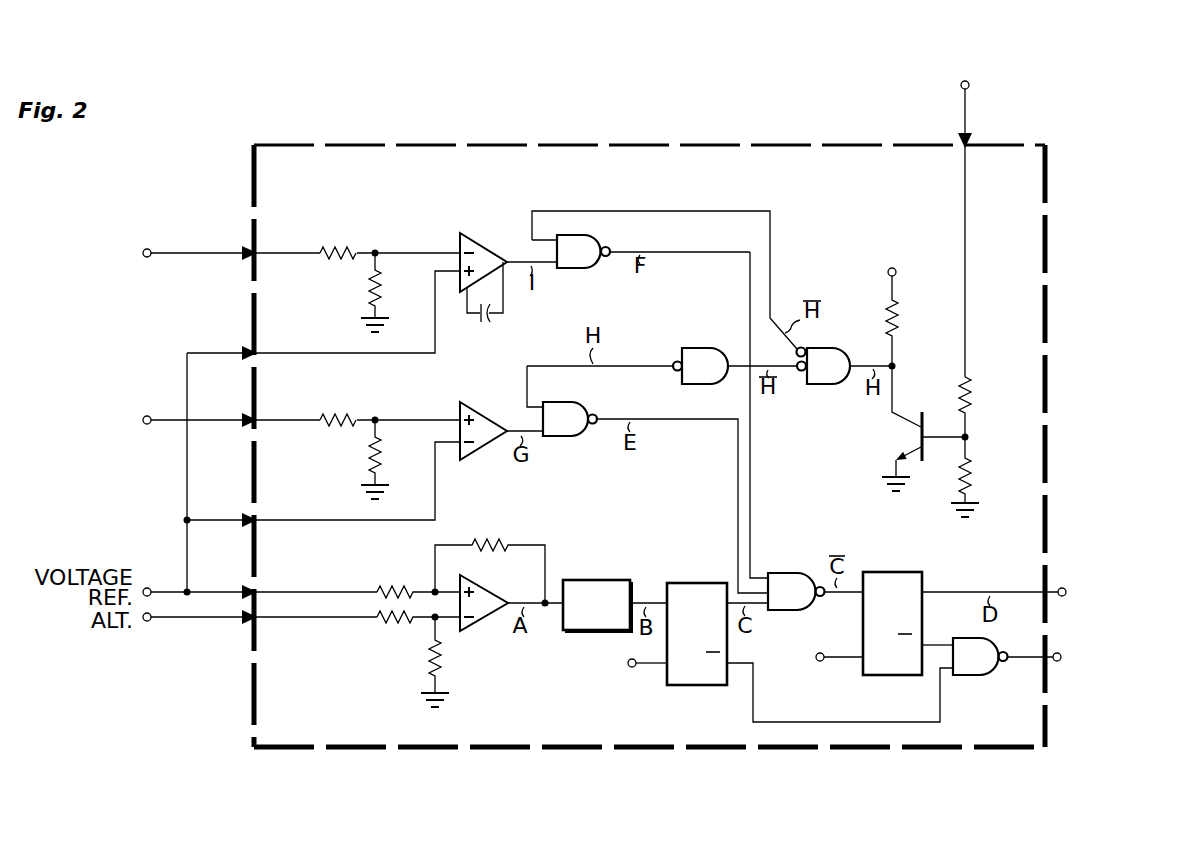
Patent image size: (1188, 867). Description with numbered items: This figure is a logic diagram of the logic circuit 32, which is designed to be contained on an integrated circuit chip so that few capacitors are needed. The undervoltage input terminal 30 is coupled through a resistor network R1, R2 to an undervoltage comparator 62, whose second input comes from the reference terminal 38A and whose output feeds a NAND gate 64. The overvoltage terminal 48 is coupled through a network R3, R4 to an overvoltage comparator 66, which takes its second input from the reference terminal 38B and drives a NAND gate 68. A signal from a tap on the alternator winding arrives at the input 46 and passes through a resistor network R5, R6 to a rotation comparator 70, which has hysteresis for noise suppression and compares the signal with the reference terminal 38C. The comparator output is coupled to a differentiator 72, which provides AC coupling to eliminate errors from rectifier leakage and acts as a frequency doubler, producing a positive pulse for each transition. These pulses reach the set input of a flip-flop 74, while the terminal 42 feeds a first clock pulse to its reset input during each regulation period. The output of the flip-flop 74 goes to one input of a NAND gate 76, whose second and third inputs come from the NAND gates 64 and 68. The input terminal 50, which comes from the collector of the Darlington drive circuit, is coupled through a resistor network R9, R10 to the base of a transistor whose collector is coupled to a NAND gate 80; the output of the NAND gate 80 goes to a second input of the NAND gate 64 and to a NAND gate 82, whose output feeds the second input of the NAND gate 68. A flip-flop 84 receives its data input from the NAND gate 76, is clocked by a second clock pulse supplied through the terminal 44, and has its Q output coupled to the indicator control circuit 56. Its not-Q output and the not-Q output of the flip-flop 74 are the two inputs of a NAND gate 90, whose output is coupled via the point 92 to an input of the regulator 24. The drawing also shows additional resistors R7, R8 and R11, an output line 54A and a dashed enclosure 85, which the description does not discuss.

The undervoltage input terminal 30 is at (249, 251).
The reference terminal 38A is at (246, 353).
The reference terminal 38B is at (246, 516).
The reference terminal 38C is at (248, 592).
The input 46 is at (242, 622).
The overvoltage terminal 48 is at (240, 419).
The logic circuit input terminal 50 is at (972, 139).
The undervoltage comparator 62 is at (468, 235).
The NAND gate 64 is at (572, 271).
The overvoltage comparator 66 is at (470, 455).
The NAND gate 68 is at (560, 437).
The rotation comparator 70 is at (464, 623).
The differentiator 72 is at (599, 580).
The flip-flop 74 is at (697, 687).
The NAND gate 76 is at (790, 573).
The NAND gate 80 is at (823, 384).
The NAND gate 82 is at (703, 347).
The flip-flop 84 is at (893, 677).
The control circuit enclosure 85 is at (578, 145).
The NAND gate 90 is at (978, 677).
The point 92 is at (1014, 657).
The terminal 42 is at (632, 668).
The terminal 44 is at (820, 661).
The output line to lamp circuit 54A is at (925, 588).
The logic circuit 32 is at (307, 718).
The indicator control circuit 56 is at (1117, 589).
The regulator 24 is at (1096, 673).
The resistor R1 is at (342, 251).
The resistor R2 is at (368, 292).
The resistor R3 is at (338, 414).
The resistor R4 is at (370, 455).
The resistor R5 is at (392, 621).
The resistor R6 is at (438, 665).
The resistor R7 is at (392, 591).
The feedback resistor R8 is at (491, 540).
The resistor R9 is at (968, 396).
The resistor R10 is at (970, 480).
The resistor R11 is at (898, 321).